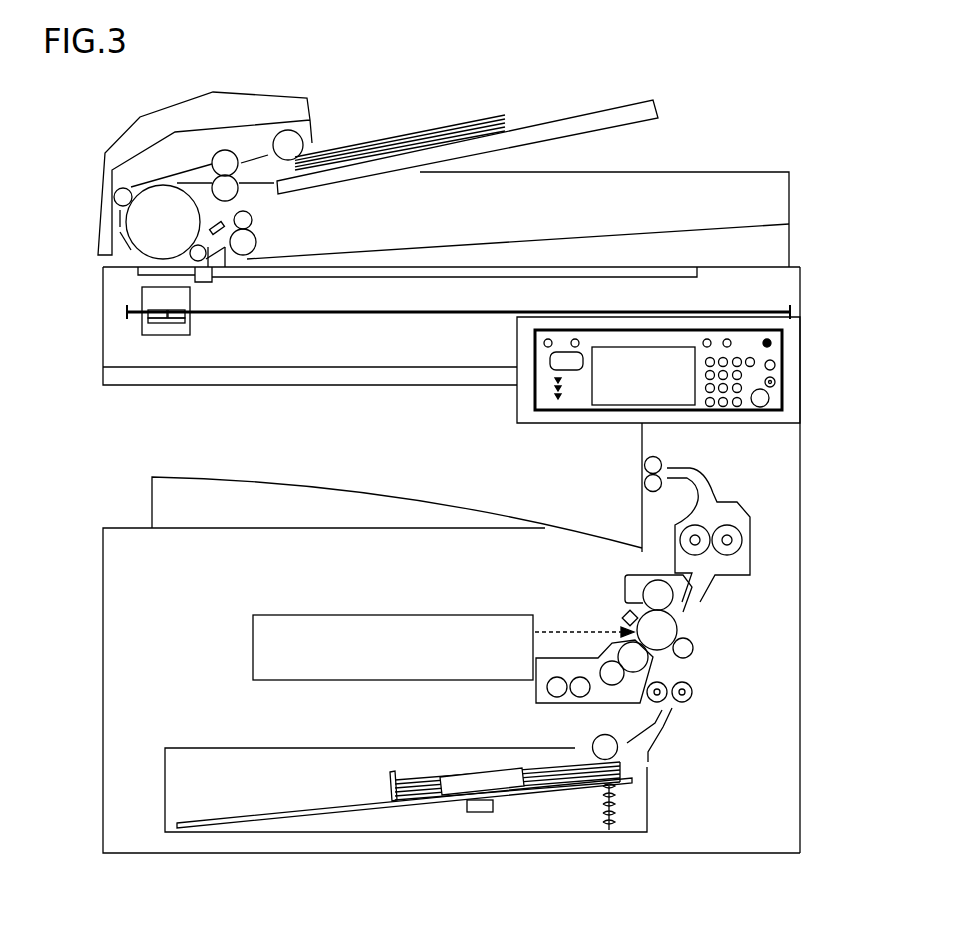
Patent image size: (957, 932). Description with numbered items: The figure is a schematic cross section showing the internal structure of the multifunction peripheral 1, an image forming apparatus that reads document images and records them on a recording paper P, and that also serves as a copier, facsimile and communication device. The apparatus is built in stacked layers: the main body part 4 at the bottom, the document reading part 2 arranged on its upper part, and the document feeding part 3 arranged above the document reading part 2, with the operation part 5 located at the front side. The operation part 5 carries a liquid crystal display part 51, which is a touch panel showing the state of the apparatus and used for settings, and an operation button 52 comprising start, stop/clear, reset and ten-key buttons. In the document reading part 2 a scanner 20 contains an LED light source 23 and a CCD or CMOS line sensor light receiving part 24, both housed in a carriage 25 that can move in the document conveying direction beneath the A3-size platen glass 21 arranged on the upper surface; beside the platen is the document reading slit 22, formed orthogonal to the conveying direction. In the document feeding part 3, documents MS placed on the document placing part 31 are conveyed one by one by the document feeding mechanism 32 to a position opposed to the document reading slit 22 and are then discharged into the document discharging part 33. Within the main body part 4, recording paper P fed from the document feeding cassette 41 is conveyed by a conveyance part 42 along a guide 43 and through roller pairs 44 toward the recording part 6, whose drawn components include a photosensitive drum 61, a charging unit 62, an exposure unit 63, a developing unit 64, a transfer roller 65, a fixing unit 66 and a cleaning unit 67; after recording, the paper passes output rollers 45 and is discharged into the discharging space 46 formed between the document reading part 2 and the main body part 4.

The multifunction peripheral 1 is at (722, 66).
The document reading part 2 is at (80, 316).
The document feeding part 3 is at (80, 191).
The main body part 4 is at (80, 602).
The operation part 5 is at (872, 308).
The recording part 6 is at (535, 592).
The scanner 20 is at (210, 329).
The platen glass 21 is at (422, 270).
The document reading slit 22 is at (138, 273).
The light source 23 is at (152, 311).
The light receiving part 24 is at (186, 309).
The carriage 25 is at (182, 335).
The document placing part 31 is at (622, 102).
The document feeding mechanism 32 is at (235, 90).
The document discharging part 33 is at (535, 237).
The document feeding cassette 41 is at (643, 788).
The conveyance part 42 is at (603, 747).
The conveyance guide 43 is at (670, 728).
The conveyance roller pair 44 is at (698, 690).
The output roller pair 45 is at (642, 457).
The discharging space 46 is at (375, 490).
The liquid crystal display part 51 is at (677, 360).
The operation button 52 is at (738, 372).
The photosensitive drum 61 is at (666, 623).
The charging device 62 is at (624, 614).
The exposure device 63 is at (295, 657).
The developing device 64 is at (540, 694).
The transfer roller 65 is at (693, 650).
The fixing device 66 is at (675, 537).
The cleaning device 67 is at (627, 575).
The document sheets MS is at (417, 132).
The recording paper P is at (427, 778).